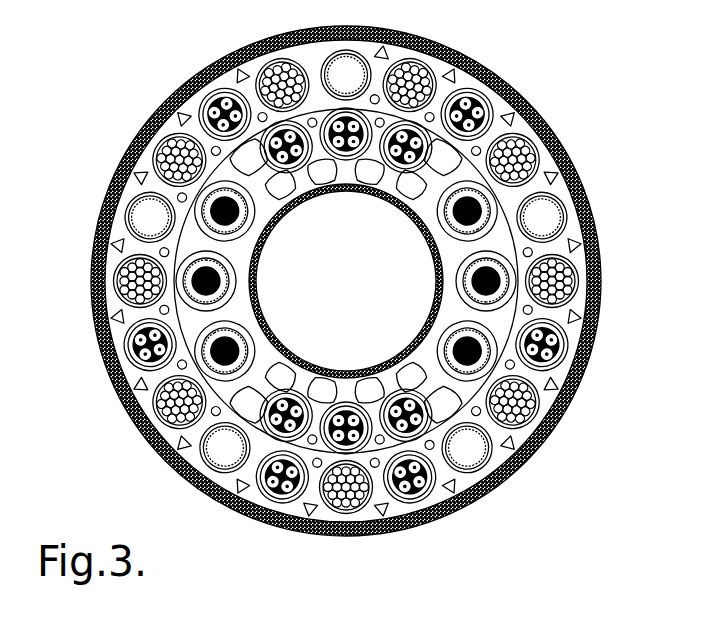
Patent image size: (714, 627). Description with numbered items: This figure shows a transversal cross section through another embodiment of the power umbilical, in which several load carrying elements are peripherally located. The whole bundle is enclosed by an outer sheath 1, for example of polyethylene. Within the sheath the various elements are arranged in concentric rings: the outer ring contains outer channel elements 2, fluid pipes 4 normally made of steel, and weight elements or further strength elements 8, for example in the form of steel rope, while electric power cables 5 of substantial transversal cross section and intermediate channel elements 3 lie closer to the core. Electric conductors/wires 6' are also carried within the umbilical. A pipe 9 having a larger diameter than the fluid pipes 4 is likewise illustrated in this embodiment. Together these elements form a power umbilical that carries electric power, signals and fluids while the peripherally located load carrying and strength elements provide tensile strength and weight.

The outer sheath 1 is at (505, 83).
The outer channel elements 2 is at (575, 337).
The intermediate channel elements 3 is at (522, 375).
The fluid pipes 4 is at (570, 213).
The electric power cables 5 is at (222, 210).
The electric conductors/wires 6' is at (400, 363).
The weight elements or further strength elements 8 is at (563, 282).
The pipe 9 is at (490, 445).